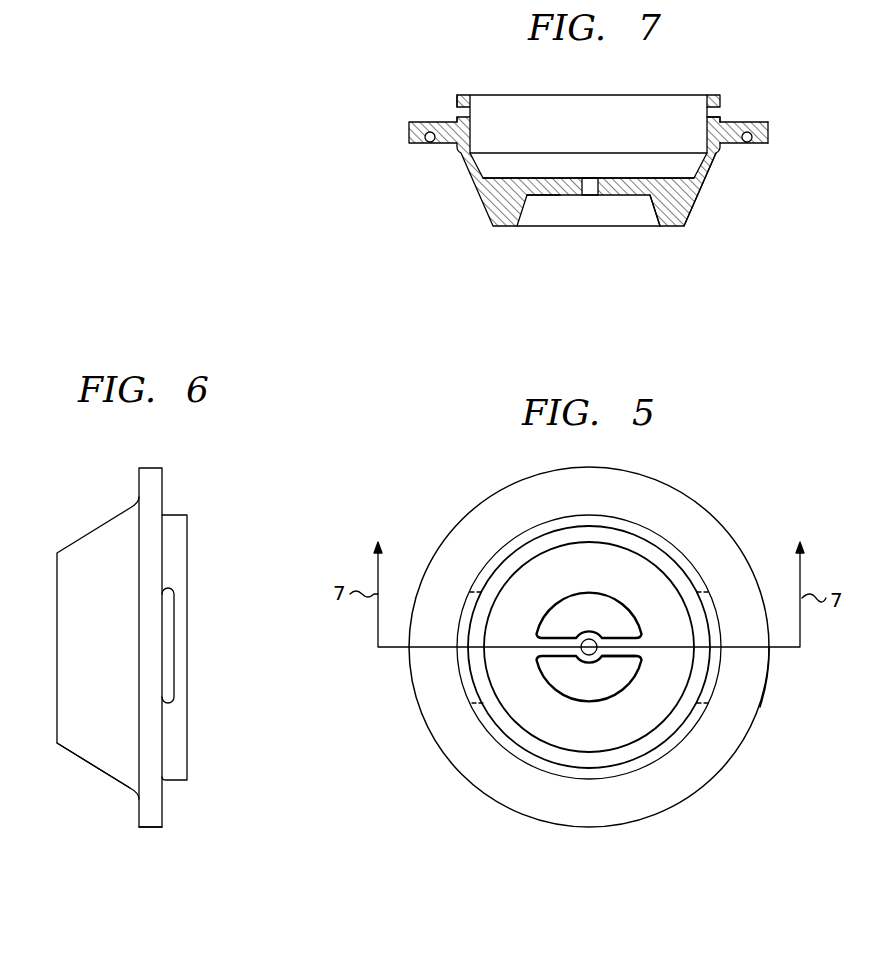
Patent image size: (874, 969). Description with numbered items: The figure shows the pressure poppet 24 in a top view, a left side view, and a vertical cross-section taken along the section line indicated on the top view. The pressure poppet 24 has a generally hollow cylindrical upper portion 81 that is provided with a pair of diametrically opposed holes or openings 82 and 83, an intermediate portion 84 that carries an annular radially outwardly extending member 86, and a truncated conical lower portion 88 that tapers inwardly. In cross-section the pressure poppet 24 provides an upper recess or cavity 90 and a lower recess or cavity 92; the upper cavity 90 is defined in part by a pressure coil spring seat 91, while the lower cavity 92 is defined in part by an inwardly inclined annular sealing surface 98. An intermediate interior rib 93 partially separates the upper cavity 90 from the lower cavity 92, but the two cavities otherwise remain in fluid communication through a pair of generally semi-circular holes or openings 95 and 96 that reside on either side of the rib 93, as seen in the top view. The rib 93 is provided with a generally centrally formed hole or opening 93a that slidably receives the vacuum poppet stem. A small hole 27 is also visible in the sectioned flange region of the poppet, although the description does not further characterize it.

In FIG. 7, the pressure poppet 24 is at (466, 95).
In FIG. 6, the pressure poppet 24 is at (101, 504).
In FIG. 5, the pressure poppet 24 is at (672, 483).
In FIG. 7, the mounting hole 27 is at (748, 147).
In FIG. 7, the upper portion 81 is at (722, 100).
In FIG. 6, the upper portion 81 is at (182, 513).
In FIG. 5, the upper portion 81 is at (677, 555).
In FIG. 7, the hole 82 is at (723, 118).
In FIG. 5, the hole 82 is at (712, 617).
In FIG. 7, the hole 83 is at (460, 114).
In FIG. 6, the hole 83 is at (167, 689).
In FIG. 5, the hole 83 is at (468, 682).
In FIG. 7, the intermediate portion 84 is at (762, 122).
In FIG. 6, the intermediate portion 84 is at (164, 487).
In FIG. 7, the annular radially outwardly extending member 86 is at (768, 137).
In FIG. 6, the annular radially outwardly extending member 86 is at (148, 830).
In FIG. 5, the annular radially outwardly extending member 86 is at (758, 710).
In FIG. 7, the lower portion 88 is at (693, 207).
In FIG. 6, the lower portion 88 is at (88, 760).
In FIG. 7, the upper cavity 90 is at (538, 136).
In FIG. 7, the pressure coil spring seat 91 is at (637, 178).
In FIG. 7, the lower cavity 92 is at (600, 222).
In FIG. 7, the intermediate interior rib 93 is at (555, 197).
In FIG. 5, the intermediate interior rib 93 is at (620, 658).
In FIG. 7, the hole 93a is at (590, 190).
In FIG. 5, the hole 93a is at (585, 662).
In FIG. 5, the semi-circular hole 95 is at (599, 580).
In FIG. 5, the semi-circular hole 96 is at (599, 734).
In FIG. 7, the inwardly inclined annular sealing surface 98 is at (658, 217).